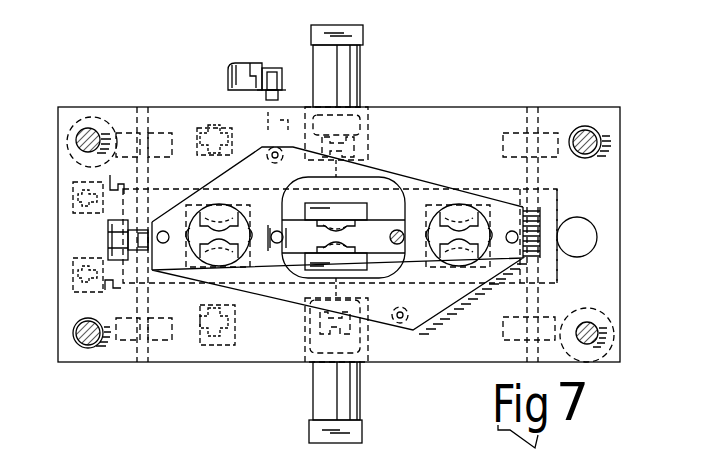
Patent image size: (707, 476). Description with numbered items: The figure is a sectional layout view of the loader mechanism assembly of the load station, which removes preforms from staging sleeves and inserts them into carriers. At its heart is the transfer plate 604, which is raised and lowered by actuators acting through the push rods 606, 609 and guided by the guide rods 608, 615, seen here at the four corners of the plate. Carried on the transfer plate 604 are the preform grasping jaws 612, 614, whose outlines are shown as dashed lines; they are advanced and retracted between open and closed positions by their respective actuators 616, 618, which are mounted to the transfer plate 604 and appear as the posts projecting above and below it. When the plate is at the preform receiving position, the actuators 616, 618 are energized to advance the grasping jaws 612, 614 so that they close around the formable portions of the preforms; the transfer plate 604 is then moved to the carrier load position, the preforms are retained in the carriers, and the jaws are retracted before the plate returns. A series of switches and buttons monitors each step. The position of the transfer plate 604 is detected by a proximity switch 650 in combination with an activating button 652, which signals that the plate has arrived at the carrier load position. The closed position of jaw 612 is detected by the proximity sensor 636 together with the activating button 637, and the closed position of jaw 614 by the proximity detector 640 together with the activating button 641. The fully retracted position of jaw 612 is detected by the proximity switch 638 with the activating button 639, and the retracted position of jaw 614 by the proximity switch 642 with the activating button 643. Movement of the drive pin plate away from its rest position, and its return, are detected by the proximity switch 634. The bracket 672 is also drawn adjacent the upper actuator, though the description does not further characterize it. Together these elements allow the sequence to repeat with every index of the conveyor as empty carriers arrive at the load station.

The transfer plate 604 is at (430, 107).
The push rod 606 is at (592, 126).
The guide rod 608 is at (98, 128).
The push rod 609 is at (96, 348).
The preform grasping jaw 612 is at (557, 190).
The preform grasping jaw 614 is at (557, 283).
The guide rod 615 is at (590, 330).
The actuator 616 is at (362, 441).
The actuator 618 is at (363, 38).
The proximity switch 634 is at (110, 241).
The proximity sensor 636 is at (80, 208).
The activating button 637 is at (118, 194).
The proximity switch 638 is at (222, 134).
The activating button 639 is at (210, 186).
The proximity detector 640 is at (82, 272).
The activating button 641 is at (112, 282).
The proximity switch 642 is at (230, 331).
The activating button 643 is at (218, 284).
The proximity switch 650 is at (292, 82).
The activating button 652 is at (274, 117).
The bracket 672 is at (243, 62).